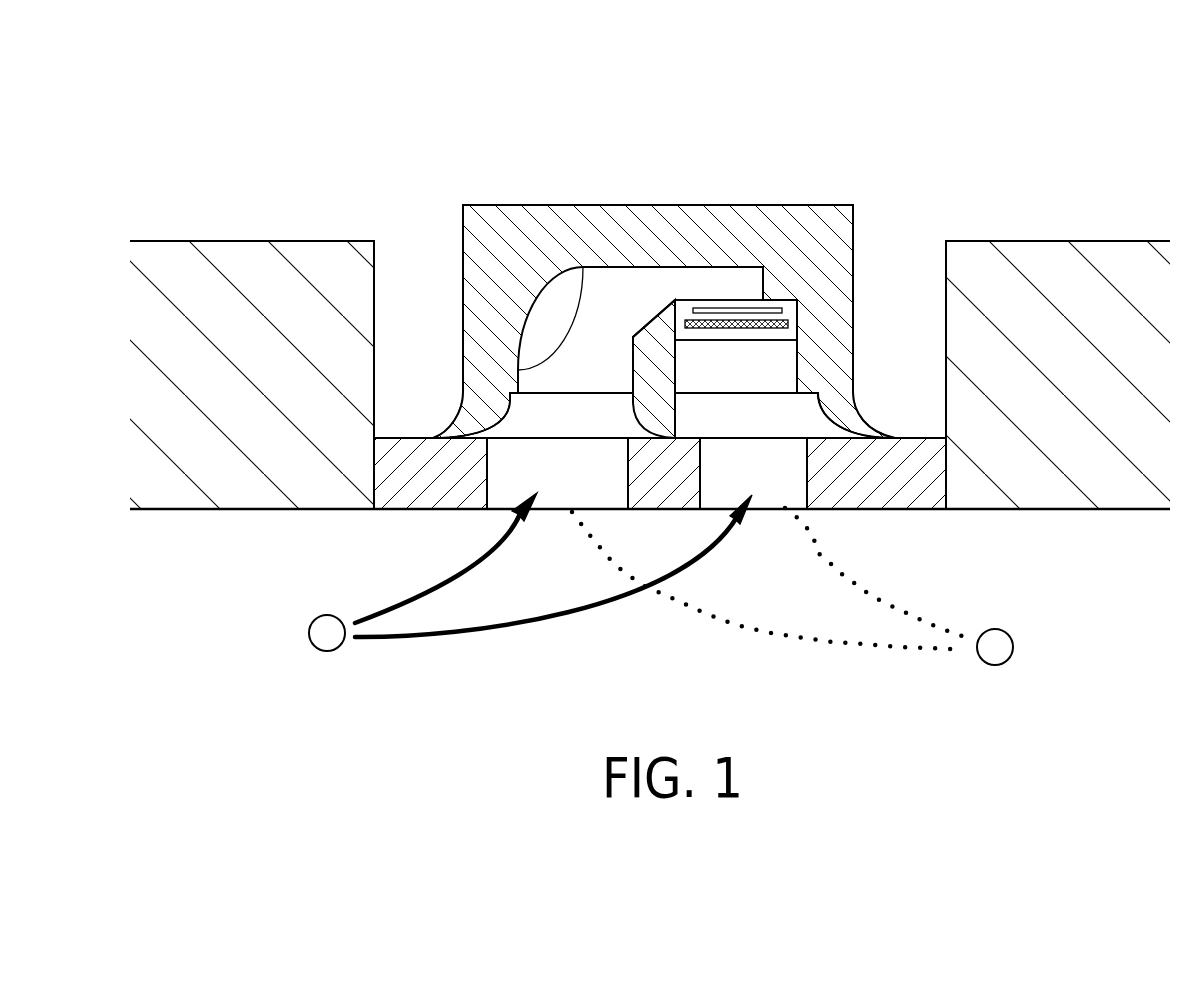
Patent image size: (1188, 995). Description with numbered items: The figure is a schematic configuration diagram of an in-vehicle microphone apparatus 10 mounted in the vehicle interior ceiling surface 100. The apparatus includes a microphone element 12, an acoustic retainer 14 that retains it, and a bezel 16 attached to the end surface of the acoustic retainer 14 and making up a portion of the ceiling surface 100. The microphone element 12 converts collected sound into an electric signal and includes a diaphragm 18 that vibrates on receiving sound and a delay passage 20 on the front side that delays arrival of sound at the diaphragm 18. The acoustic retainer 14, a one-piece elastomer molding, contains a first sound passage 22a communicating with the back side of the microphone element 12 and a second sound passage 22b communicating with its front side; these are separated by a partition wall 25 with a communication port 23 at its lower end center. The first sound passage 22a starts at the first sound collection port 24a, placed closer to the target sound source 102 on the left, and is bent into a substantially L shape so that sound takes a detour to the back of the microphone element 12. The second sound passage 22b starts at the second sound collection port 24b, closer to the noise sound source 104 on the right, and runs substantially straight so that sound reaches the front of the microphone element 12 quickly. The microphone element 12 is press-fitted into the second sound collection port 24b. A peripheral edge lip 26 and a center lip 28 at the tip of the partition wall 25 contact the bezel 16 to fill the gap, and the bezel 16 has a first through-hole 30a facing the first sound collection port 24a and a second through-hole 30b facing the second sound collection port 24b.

The in-vehicle microphone apparatus 10 is at (657, 372).
The microphone element 12 is at (758, 221).
The acoustic retainer 14 is at (503, 210).
The bezel 16 is at (657, 577).
The diaphragm 18 is at (720, 308).
The delay passage 20 is at (772, 323).
The first sound passage 22a is at (602, 287).
The second sound passage 22b is at (778, 362).
The communication port 23 is at (662, 292).
The first sound collection port 24a is at (518, 410).
The second sound collection port 24b is at (813, 427).
The partition wall 25 is at (648, 358).
The peripheral edge lip 26 is at (462, 421).
The center lip 28 is at (667, 445).
The first through-hole 30a is at (550, 492).
The second through-hole 30b is at (758, 490).
The vehicle interior ceiling surface 100 is at (233, 492).
The target sound source 102 is at (530, 590).
The noise sound source 104 is at (796, 603).